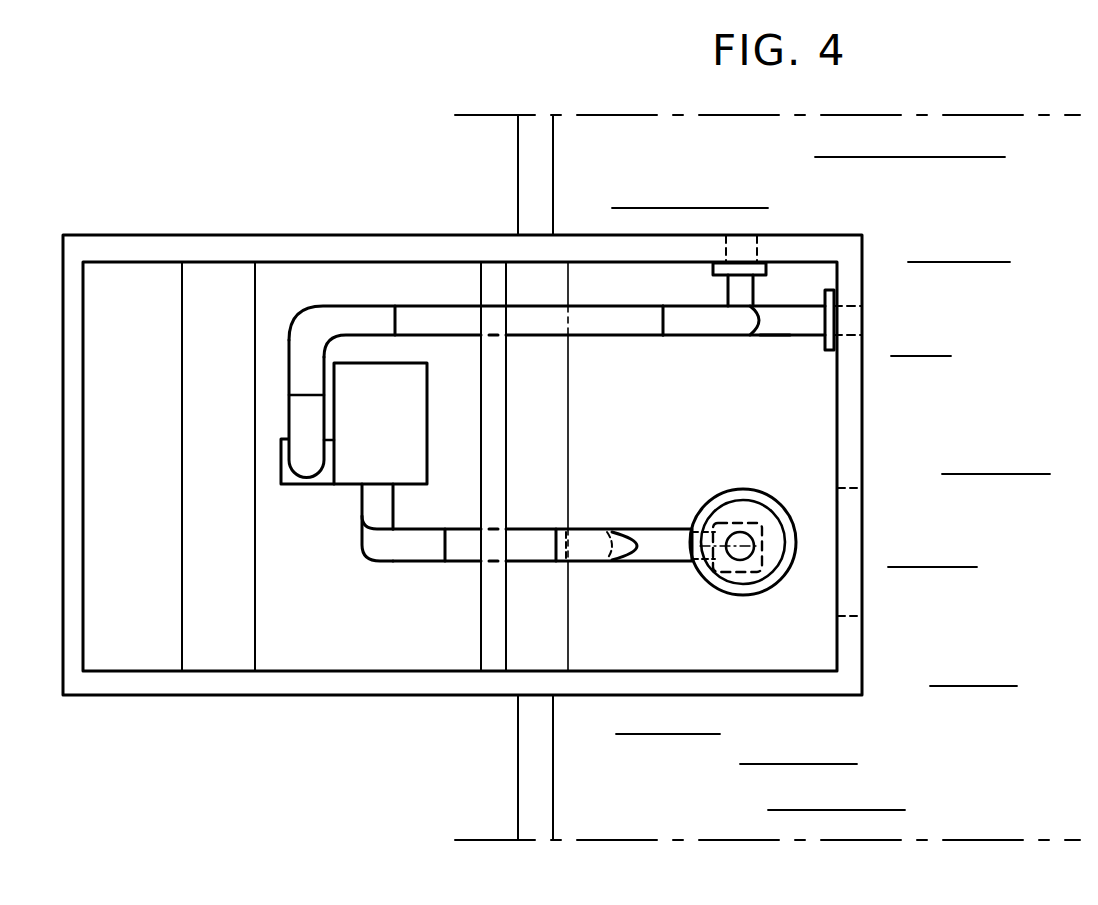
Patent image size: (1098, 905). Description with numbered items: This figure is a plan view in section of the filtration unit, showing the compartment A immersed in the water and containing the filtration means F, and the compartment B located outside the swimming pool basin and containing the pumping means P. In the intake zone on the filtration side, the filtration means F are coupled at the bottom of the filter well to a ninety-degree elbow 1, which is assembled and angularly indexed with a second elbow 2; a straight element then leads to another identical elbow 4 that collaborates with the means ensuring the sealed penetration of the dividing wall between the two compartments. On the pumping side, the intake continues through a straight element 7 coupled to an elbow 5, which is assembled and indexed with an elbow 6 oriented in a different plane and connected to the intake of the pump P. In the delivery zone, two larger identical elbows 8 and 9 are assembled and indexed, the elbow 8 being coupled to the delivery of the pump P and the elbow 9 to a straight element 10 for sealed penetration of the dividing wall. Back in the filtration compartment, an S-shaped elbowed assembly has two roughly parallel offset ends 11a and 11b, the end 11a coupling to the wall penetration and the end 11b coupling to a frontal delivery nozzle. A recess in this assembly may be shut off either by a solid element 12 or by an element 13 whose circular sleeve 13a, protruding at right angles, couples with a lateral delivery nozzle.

The 90° elbow 1 is at (712, 590).
The 90° elbow 2 is at (655, 550).
The 90° elbow 4 is at (590, 547).
The 90° elbow 5 is at (404, 552).
The 90° elbow 6 is at (370, 513).
The straight element 7 is at (461, 552).
The 90° elbow 8 is at (305, 432).
The 90° elbow 9 is at (356, 320).
The straight element 10 is at (447, 320).
The end of elbowed assembly 11a is at (722, 328).
The end of elbowed assembly 11b is at (862, 321).
The solid element 12 is at (773, 338).
The shutting-off element 13 is at (719, 297).
The circular sleeve 13a is at (758, 272).
The pumping means P is at (362, 458).
The filtration means F is at (752, 510).
The compartment A is at (768, 640).
The compartment B is at (372, 650).